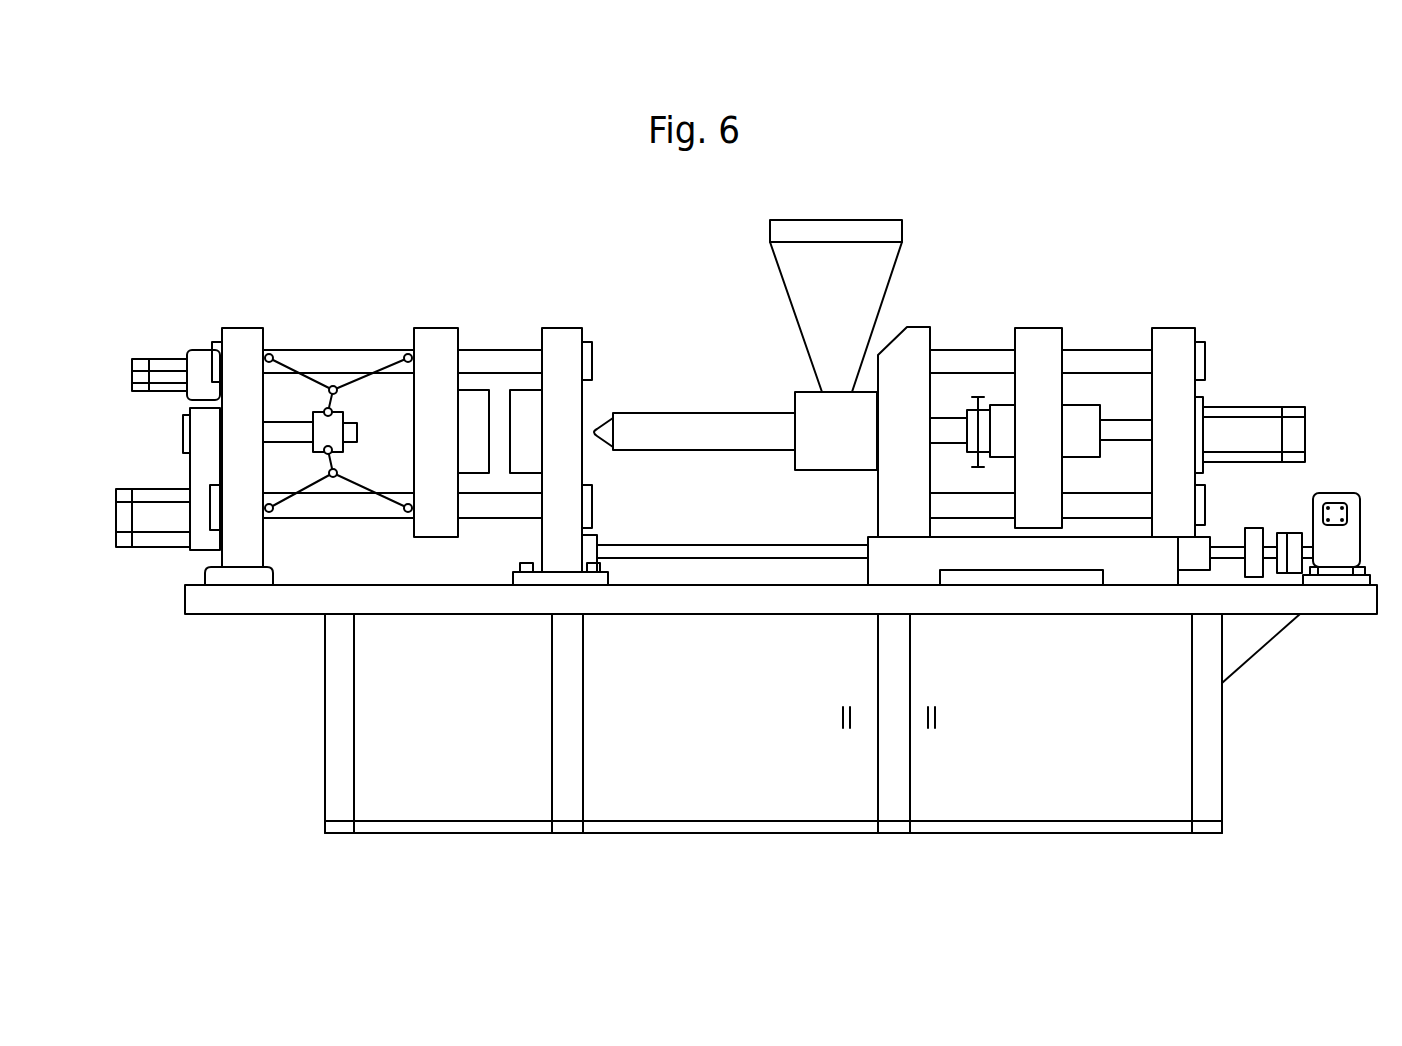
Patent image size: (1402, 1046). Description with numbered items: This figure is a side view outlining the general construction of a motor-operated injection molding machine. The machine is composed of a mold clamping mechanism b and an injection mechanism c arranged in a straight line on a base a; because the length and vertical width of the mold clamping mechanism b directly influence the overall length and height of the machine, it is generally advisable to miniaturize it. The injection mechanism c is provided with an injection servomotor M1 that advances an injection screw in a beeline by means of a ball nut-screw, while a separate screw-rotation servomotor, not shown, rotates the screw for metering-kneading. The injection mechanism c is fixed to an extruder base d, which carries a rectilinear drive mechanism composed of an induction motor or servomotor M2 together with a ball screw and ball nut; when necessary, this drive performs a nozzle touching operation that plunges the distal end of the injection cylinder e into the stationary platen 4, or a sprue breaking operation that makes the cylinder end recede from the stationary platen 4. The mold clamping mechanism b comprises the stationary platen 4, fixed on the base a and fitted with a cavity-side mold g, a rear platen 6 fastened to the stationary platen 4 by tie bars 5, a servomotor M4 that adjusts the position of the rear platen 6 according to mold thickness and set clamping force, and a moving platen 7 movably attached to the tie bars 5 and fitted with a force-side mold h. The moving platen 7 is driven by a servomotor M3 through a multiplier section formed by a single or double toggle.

The base a is at (296, 772).
The mold clamping mechanism b is at (391, 313).
The injection mechanism c is at (1036, 281).
The extruder base d is at (1024, 555).
The injection cylinder e is at (700, 418).
The cavity-side mold g is at (526, 408).
The force-side mold h is at (477, 408).
The stationary platen 4 is at (568, 465).
The tie bars 5 is at (498, 362).
The rear platen 6 is at (242, 342).
The moving platen 7 is at (425, 520).
The injection servomotor M1 is at (1255, 407).
The induction motor or servomotor M2 is at (1333, 493).
The servomotor M3 is at (123, 545).
The servomotor M4 is at (150, 359).